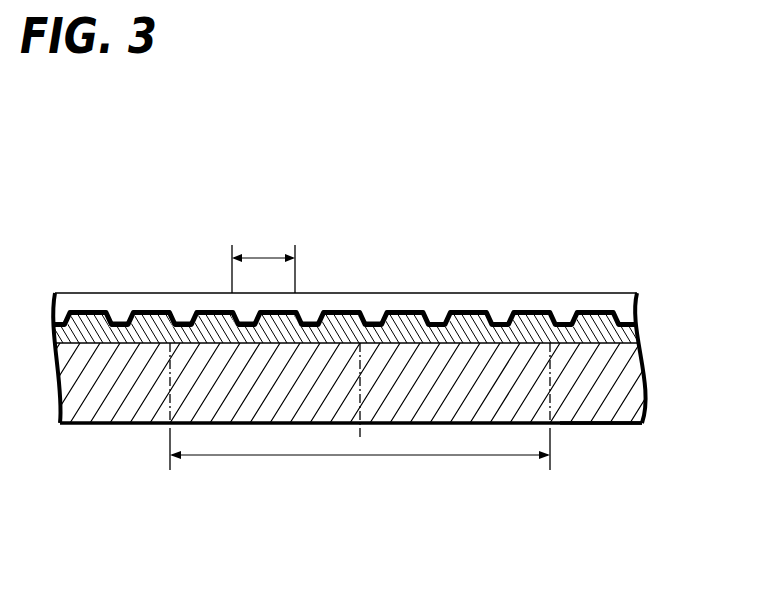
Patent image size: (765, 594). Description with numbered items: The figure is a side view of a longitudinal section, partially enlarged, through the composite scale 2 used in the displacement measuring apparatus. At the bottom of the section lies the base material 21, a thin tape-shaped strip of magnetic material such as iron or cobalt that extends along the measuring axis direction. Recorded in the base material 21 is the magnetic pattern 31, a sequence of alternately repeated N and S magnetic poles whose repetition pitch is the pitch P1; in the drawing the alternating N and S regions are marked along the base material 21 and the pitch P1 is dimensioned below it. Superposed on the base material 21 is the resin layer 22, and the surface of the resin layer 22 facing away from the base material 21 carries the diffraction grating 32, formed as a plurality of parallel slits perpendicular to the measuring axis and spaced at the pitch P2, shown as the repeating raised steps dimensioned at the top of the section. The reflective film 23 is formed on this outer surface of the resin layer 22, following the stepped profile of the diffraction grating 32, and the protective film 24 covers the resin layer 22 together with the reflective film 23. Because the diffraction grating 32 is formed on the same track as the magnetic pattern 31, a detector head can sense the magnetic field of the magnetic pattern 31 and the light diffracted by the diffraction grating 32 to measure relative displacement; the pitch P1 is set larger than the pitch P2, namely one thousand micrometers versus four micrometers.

The composite scale 2 is at (636, 260).
The base material 21 is at (632, 380).
The resin layer 22 is at (622, 334).
The reflective film 23 is at (531, 310).
The protective film 24 is at (341, 302).
The magnetic pattern 31 is at (610, 440).
The diffraction grating 32 is at (176, 296).
The pitch of the magnetic pattern P1 is at (360, 458).
The pitch of the diffraction grating P2 is at (263, 257).